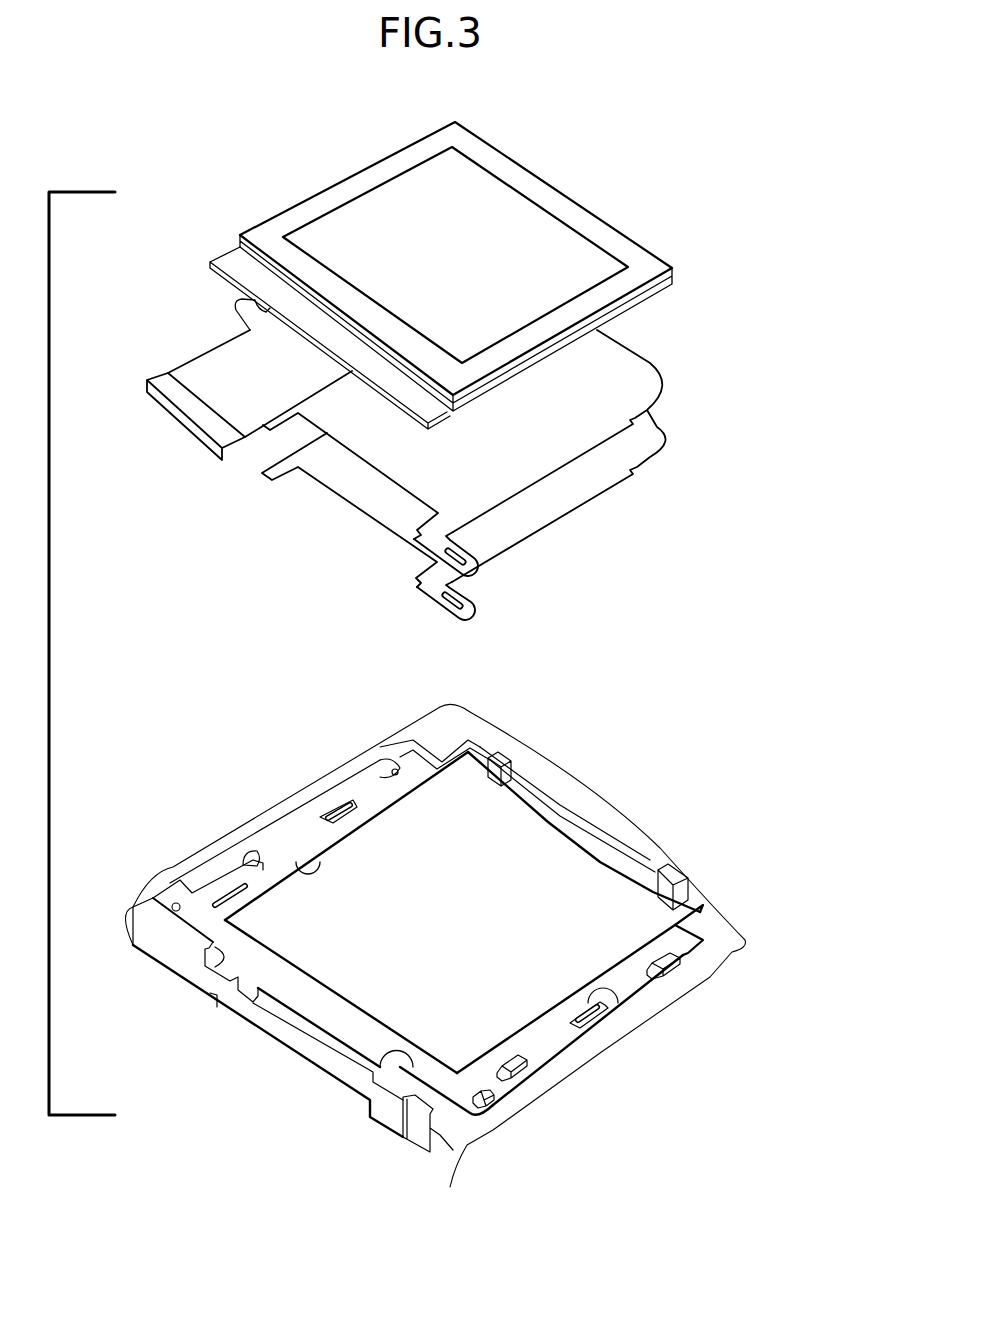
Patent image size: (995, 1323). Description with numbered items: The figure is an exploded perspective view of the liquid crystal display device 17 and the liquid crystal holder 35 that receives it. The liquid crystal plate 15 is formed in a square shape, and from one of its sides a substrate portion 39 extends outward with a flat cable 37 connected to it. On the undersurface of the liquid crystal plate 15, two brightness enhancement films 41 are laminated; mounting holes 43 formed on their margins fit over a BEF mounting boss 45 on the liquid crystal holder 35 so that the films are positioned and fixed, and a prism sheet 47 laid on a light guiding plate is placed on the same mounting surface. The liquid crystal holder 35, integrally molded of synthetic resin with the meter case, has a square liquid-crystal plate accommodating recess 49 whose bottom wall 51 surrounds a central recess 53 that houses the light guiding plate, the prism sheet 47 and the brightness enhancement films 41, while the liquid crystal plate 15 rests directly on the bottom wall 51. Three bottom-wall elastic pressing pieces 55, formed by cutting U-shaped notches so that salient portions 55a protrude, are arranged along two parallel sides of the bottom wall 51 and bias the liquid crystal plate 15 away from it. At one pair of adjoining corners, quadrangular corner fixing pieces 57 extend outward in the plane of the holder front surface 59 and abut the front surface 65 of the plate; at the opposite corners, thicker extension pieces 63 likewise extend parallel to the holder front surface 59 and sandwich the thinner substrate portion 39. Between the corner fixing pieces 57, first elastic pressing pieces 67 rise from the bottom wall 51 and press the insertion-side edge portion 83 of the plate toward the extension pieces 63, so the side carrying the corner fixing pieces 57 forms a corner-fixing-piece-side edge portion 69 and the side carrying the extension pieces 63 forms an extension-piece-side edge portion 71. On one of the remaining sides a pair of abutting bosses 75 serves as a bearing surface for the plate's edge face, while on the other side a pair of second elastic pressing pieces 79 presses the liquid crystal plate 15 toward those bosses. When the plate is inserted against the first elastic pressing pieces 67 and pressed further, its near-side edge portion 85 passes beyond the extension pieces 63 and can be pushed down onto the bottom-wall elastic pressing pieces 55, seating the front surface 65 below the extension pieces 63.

The liquid crystal plate 15 is at (463, 124).
The liquid crystal display device 17 is at (218, 206).
The liquid crystal holder 35 is at (152, 952).
The flat cable 37 is at (207, 365).
The substrate portion 39 is at (268, 278).
The brightness enhancement films 41 is at (645, 443).
The mounting holes 43 is at (456, 598).
The BEF mounting boss 45 is at (490, 1105).
The prism sheet 47 is at (543, 848).
The liquid-crystal plate accommodating recess 49 is at (304, 832).
The bottom wall 51 is at (397, 755).
The recess 53 is at (282, 870).
The bottom-wall elastic pressing pieces 55 is at (338, 805).
The salient portions 55a is at (356, 803).
The corner fixing pieces 57 is at (433, 758).
The holder front surface 59 is at (722, 922).
The extension pieces 63 is at (212, 962).
The front surface 65 is at (552, 242).
The first elastic pressing pieces 67 is at (503, 765).
The corner-fixing-piece-side edge portion 69 is at (592, 836).
The extension-piece-side edge portion 71 is at (318, 1006).
The abutting bosses 75 is at (382, 764).
The second elastic pressing pieces 79 is at (672, 966).
The insertion-side edge portion 83 is at (566, 195).
The near-side edge portion 85 is at (300, 340).